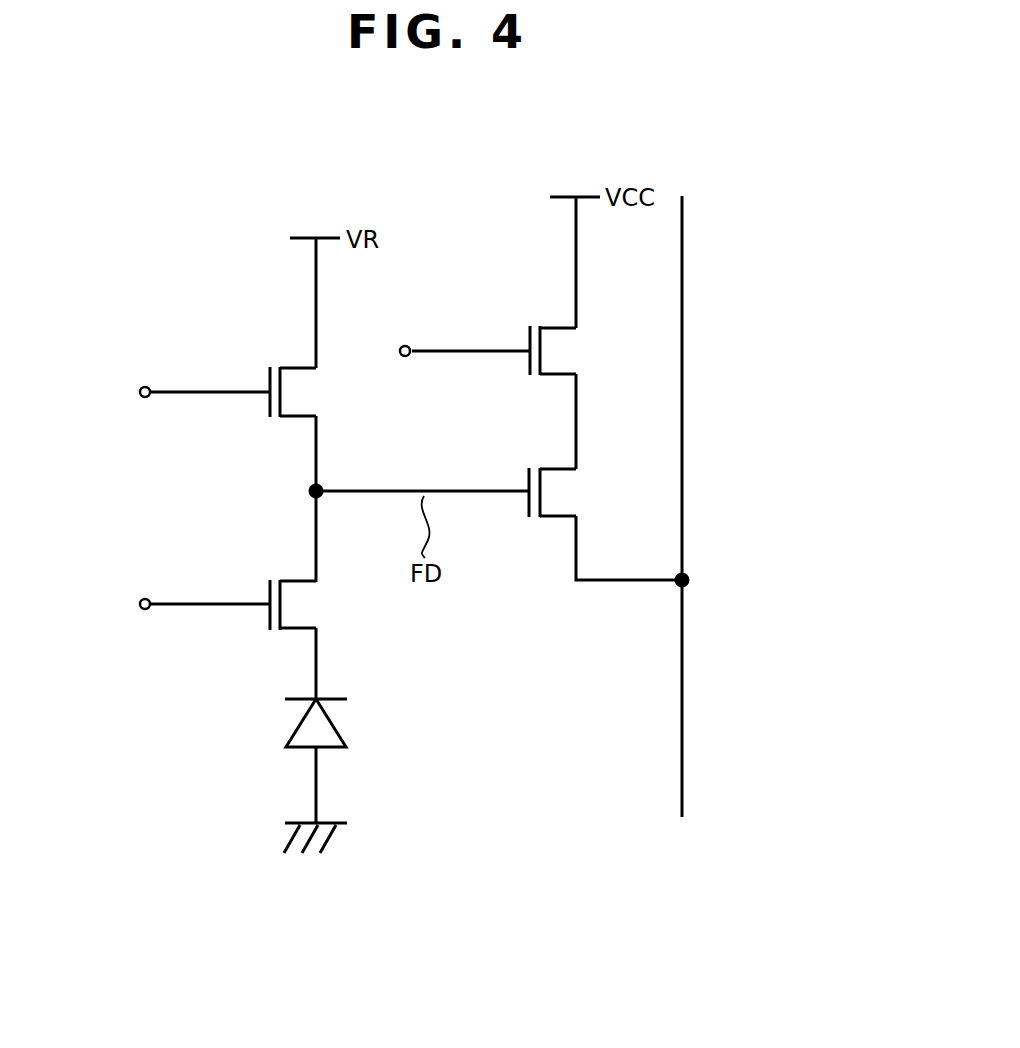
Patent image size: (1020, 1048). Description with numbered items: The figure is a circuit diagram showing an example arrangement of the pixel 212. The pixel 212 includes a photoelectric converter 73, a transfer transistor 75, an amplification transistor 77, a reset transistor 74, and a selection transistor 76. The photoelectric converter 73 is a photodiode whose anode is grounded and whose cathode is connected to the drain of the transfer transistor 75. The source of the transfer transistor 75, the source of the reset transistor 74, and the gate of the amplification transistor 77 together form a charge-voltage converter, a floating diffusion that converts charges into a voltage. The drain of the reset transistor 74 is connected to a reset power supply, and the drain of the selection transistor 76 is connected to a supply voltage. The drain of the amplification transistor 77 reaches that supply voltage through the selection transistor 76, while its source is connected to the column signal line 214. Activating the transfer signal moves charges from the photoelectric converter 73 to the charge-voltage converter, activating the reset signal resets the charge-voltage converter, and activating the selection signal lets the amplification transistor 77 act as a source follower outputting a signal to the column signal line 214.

The photoelectric converter 73 is at (276, 728).
The reset transistor 74 is at (284, 357).
The transfer transistor 75 is at (275, 571).
The selection transistor 76 is at (535, 323).
The amplification transistor 77 is at (585, 494).
The pixel 212 is at (507, 938).
The column signal line 214 is at (683, 746).